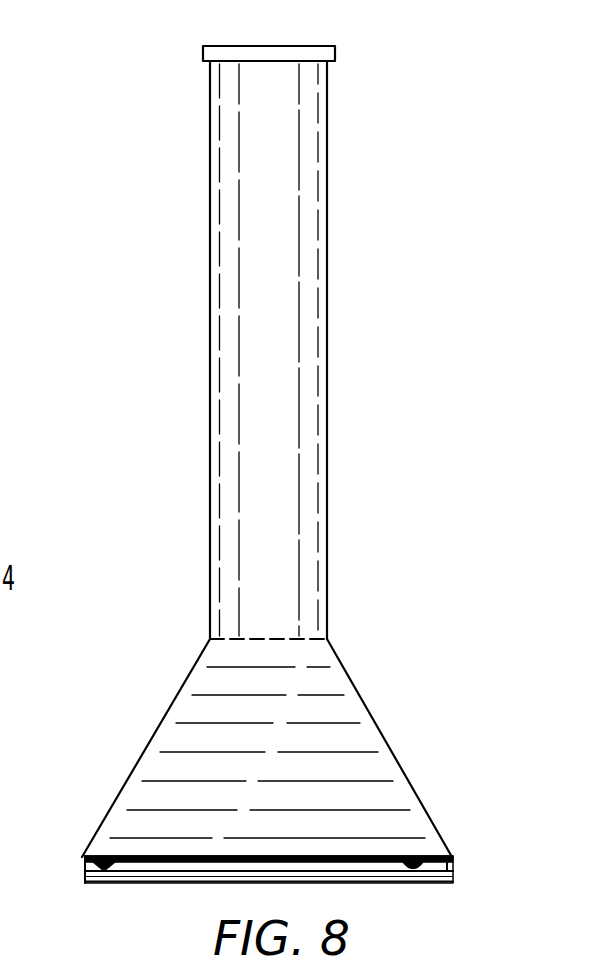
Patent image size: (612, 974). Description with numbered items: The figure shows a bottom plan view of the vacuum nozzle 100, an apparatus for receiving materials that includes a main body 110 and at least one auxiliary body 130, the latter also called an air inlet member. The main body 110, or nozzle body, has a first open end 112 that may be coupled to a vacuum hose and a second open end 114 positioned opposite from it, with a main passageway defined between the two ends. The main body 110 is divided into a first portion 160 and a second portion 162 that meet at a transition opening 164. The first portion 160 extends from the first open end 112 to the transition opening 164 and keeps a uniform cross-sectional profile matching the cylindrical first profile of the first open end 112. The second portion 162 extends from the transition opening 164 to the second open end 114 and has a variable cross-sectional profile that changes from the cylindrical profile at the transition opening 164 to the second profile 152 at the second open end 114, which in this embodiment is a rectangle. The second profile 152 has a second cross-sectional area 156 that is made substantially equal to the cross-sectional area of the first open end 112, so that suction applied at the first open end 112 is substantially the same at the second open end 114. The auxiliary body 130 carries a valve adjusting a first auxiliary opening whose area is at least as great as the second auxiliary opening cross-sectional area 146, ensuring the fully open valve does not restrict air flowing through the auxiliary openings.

The vacuum nozzle 100 is at (409, 131).
The first open end 112 is at (301, 46).
The main body 110 is at (210, 310).
The first portion 160 is at (328, 231).
The transition opening 164 is at (302, 639).
The second portion 162 is at (370, 708).
The second open end 114 is at (147, 857).
The second cross-sectional area 156 is at (112, 860).
The second profile 152 is at (428, 858).
The second auxiliary opening cross-sectional area 146 is at (85, 875).
The auxiliary body 130 is at (373, 883).